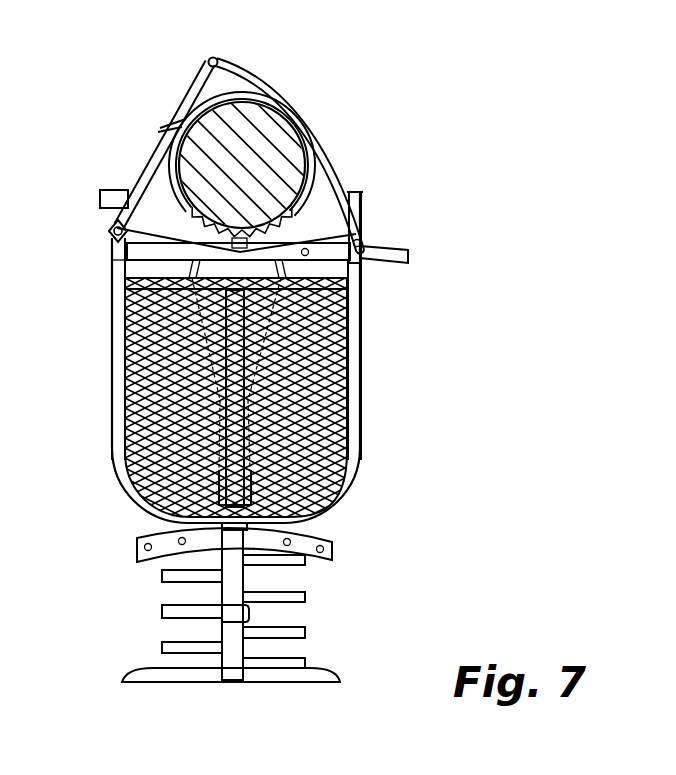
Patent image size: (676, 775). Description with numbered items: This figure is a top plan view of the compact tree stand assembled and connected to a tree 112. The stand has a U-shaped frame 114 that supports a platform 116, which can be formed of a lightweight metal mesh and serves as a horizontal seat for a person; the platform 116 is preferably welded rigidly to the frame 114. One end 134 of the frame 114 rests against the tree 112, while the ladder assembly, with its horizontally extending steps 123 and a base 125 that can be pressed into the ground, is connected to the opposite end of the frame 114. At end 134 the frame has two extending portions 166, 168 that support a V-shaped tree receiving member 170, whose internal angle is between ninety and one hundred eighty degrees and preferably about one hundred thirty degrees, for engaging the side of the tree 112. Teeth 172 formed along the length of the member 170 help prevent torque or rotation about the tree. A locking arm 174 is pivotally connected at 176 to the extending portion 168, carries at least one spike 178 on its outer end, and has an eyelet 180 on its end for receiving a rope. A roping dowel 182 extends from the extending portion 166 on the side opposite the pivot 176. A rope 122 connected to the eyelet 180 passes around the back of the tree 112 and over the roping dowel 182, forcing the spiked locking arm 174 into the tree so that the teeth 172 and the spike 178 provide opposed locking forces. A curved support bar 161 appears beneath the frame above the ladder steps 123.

The tree 112 is at (281, 134).
The frame 114 is at (348, 485).
The platform 116 is at (357, 365).
The rope 122 is at (258, 90).
The steps 123 is at (162, 612).
The base 125 is at (155, 678).
The end of frame 134 is at (113, 285).
The curved support bar 161 is at (340, 548).
The extending portion 166 is at (363, 224).
The extending portion 168 is at (110, 220).
The V-shaped tree receiving member 170 is at (120, 190).
The teeth 172 is at (310, 187).
The locking arm 174 is at (160, 131).
The pivot 176 is at (110, 233).
The spike 178 is at (190, 130).
The eyelet 180 is at (216, 62).
The roping dowel 182 is at (410, 258).